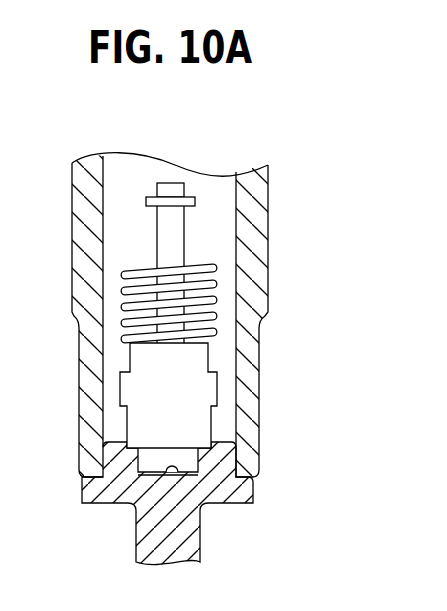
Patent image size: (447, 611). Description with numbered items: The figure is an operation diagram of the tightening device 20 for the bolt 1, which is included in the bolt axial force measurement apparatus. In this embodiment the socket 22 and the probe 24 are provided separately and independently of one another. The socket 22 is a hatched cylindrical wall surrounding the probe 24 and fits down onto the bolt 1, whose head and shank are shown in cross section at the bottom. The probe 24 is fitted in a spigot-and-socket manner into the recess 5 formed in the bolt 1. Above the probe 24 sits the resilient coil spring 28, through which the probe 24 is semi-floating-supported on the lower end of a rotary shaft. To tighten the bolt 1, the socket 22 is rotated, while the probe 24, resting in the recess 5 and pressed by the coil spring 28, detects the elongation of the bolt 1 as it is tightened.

The bolt 1 is at (248, 495).
The recess 5 is at (172, 472).
The socket 22 is at (262, 266).
The probe 24 is at (193, 422).
The resilient coil spring 28 is at (125, 301).
The tightening device 20 is at (300, 196).